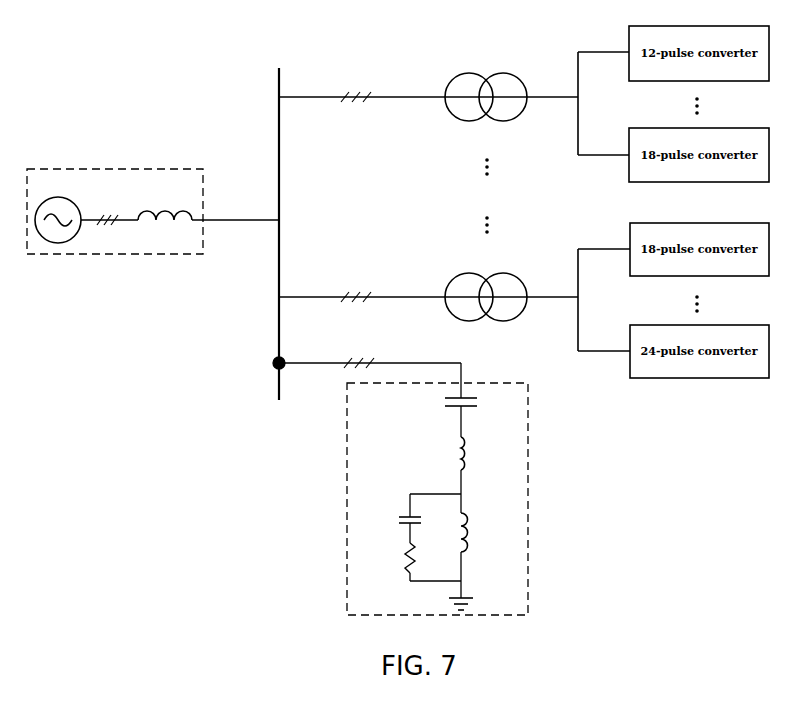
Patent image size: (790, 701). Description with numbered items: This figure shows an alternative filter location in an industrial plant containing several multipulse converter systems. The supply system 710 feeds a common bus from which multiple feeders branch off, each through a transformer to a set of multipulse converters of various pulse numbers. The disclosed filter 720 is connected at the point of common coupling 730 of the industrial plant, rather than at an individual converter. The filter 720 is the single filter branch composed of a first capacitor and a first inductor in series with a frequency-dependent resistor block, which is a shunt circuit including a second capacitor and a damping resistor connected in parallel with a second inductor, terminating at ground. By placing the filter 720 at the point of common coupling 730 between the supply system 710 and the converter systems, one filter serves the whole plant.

The AC power source with source impedance 710 is at (218, 146).
The harmonic filter 720 is at (532, 598).
The bus node 730 is at (274, 359).